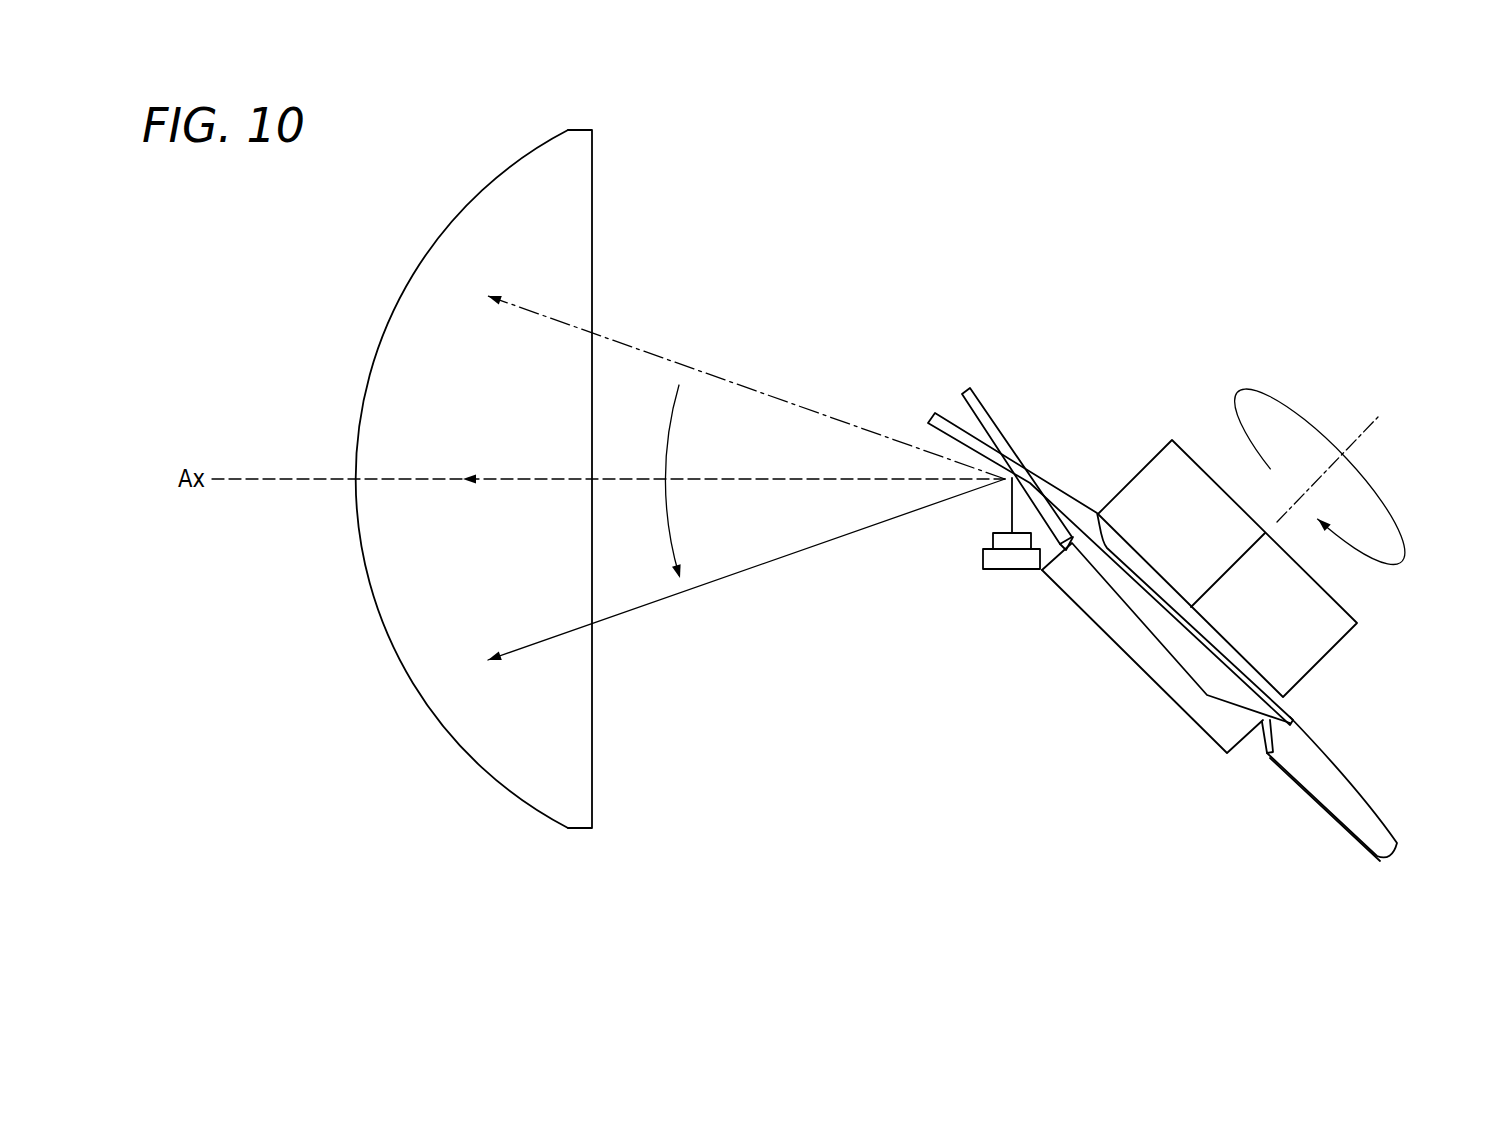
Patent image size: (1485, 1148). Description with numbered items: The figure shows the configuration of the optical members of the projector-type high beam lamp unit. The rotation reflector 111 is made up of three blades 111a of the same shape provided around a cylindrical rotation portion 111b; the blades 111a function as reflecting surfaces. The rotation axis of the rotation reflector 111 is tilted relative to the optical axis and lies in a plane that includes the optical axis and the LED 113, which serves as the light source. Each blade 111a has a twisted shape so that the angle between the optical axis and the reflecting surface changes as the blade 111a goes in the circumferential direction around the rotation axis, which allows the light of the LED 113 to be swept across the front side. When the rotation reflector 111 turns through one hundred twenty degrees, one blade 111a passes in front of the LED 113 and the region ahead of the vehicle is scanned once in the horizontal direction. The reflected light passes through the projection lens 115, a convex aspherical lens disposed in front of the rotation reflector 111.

The rotation reflector 111 is at (1223, 792).
The blade 111a is at (1230, 708).
The rotation portion 111b is at (1313, 667).
The LED 113 is at (1003, 569).
The projection lens 115 is at (445, 727).